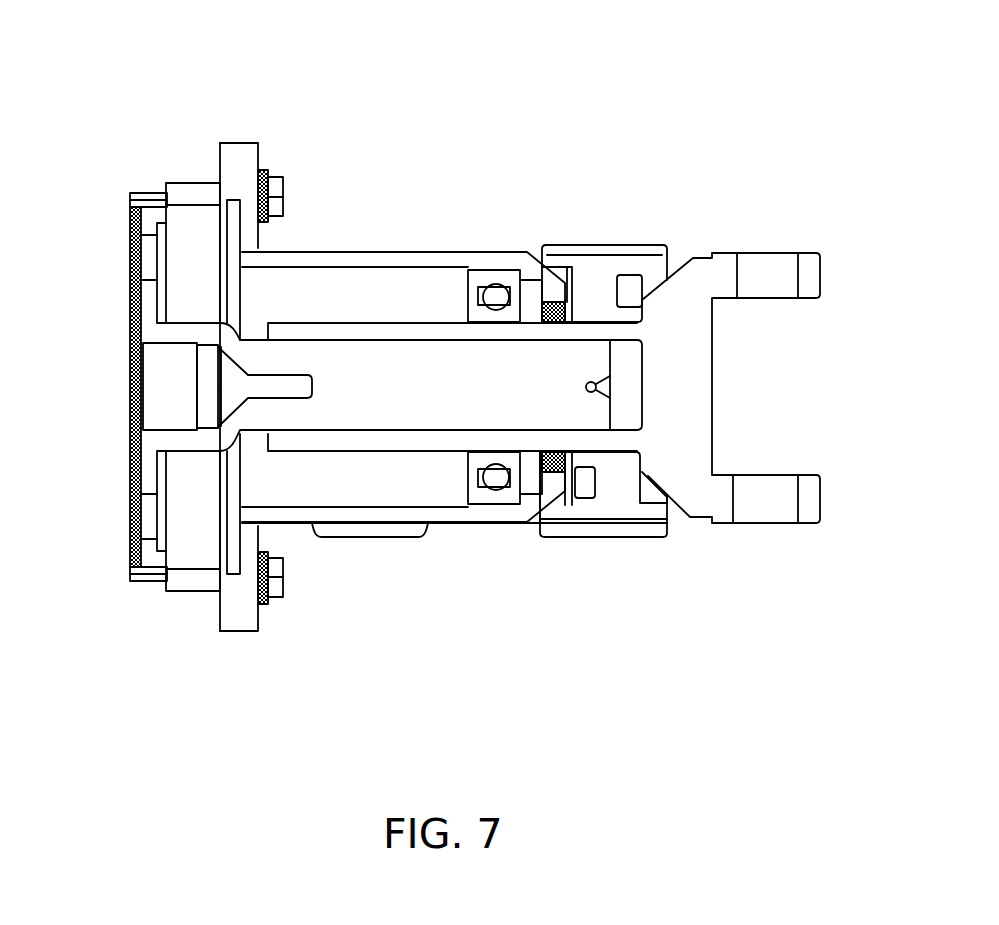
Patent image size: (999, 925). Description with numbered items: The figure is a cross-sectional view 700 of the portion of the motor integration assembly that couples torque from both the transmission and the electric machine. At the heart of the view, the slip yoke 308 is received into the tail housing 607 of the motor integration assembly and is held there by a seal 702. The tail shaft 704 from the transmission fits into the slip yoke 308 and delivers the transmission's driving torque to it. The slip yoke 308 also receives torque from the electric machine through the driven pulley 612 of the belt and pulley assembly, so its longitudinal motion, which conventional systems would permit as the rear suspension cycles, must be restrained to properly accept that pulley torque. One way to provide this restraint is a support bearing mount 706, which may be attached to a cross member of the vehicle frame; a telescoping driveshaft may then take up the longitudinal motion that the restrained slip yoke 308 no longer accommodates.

The cross-sectional view 700 is at (884, 120).
The tail housing 607 is at (366, 250).
The support bearing mount 706 is at (495, 284).
The seal 702 is at (558, 462).
The driven pulley 612 is at (592, 280).
The slip yoke 308 is at (700, 258).
The tail shaft 704 is at (152, 388).